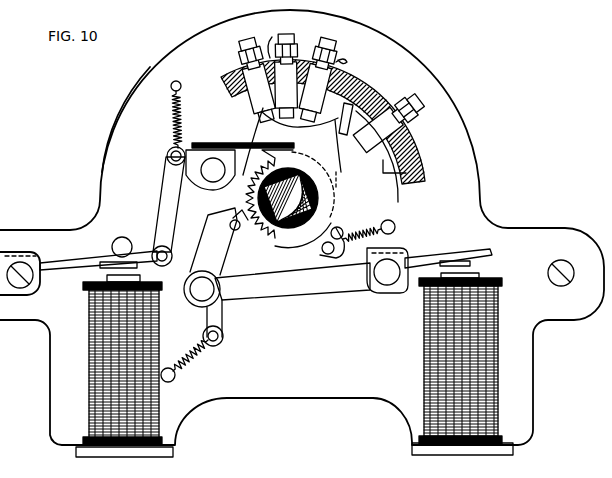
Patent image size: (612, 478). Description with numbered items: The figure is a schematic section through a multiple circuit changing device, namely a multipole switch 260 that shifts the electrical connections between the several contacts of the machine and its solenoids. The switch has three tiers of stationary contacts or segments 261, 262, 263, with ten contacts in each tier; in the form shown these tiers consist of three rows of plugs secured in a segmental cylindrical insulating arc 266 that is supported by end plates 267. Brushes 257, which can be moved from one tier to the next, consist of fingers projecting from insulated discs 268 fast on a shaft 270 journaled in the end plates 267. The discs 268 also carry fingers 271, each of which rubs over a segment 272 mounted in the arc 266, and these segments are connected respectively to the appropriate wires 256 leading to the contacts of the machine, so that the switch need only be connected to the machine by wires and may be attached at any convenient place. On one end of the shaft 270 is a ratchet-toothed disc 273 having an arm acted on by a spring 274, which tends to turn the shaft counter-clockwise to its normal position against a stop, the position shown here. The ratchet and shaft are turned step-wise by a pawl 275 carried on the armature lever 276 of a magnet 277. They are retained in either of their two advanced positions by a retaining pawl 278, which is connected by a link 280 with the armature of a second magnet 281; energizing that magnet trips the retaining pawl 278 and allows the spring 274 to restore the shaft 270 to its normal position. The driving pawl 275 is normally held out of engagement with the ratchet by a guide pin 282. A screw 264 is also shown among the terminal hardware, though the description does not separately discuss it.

The wires 256 is at (417, 113).
The brushes 257 is at (262, 112).
The multipole switch 260 is at (98, 166).
The stationary contacts 261 is at (232, 70).
The stationary contacts 262 is at (284, 120).
The stationary contacts 263 is at (362, 77).
The terminal screw 264 is at (270, 38).
The insulating arc 266 is at (422, 150).
The end plates 267 is at (137, 123).
The insulated discs 268 is at (338, 156).
The shaft 270 is at (322, 201).
The fingers 271 is at (349, 118).
The segment 272 is at (392, 197).
The ratchet-toothed disc 273 is at (266, 242).
The spring 274 is at (372, 238).
The pawl 275 is at (231, 249).
The armature lever 276 is at (342, 288).
The magnet 277 is at (426, 324).
The pawl 278 is at (220, 147).
The link 280 is at (165, 197).
The magnet 281 is at (86, 337).
The guide pin 282 is at (236, 229).